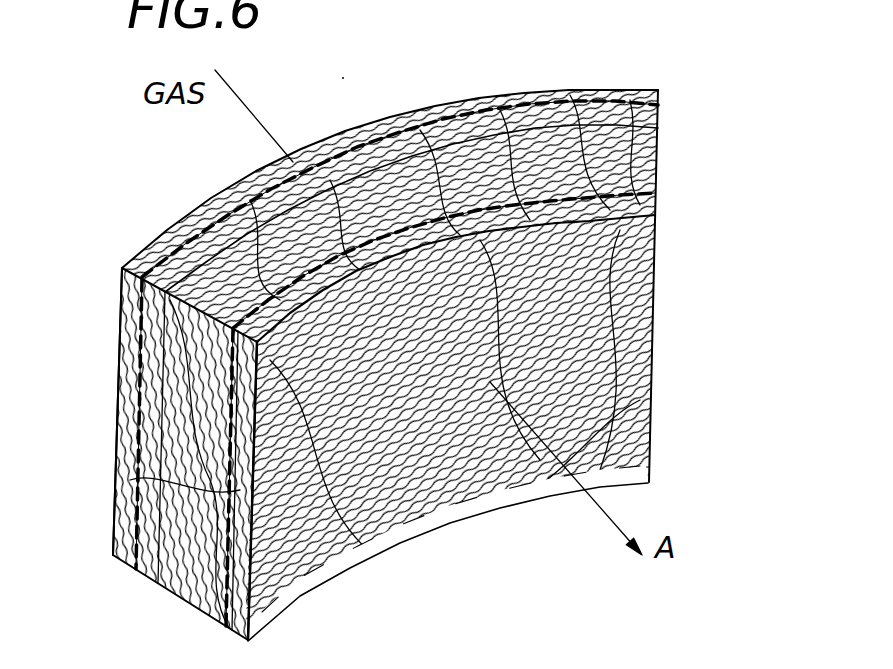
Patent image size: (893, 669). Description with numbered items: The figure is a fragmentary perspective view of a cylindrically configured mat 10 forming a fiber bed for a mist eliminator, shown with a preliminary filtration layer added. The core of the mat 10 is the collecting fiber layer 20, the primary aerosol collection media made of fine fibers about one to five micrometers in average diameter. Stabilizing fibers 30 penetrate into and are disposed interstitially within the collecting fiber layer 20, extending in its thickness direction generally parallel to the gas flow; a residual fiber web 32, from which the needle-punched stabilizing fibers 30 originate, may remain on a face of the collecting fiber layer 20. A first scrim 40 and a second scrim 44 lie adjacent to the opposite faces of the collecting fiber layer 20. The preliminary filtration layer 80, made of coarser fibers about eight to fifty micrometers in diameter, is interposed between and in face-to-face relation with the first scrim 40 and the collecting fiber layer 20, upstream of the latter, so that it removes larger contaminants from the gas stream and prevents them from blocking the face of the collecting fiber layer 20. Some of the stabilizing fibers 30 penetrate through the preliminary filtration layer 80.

The mat 10 is at (548, 46).
The collecting fiber layer 20 is at (180, 590).
The stabilizing fibers 30 is at (260, 246).
The residual fiber web 32 is at (130, 481).
The first scrim 40 is at (658, 105).
The second scrim 44 is at (658, 193).
The preliminary filtration layer 80 is at (645, 126).